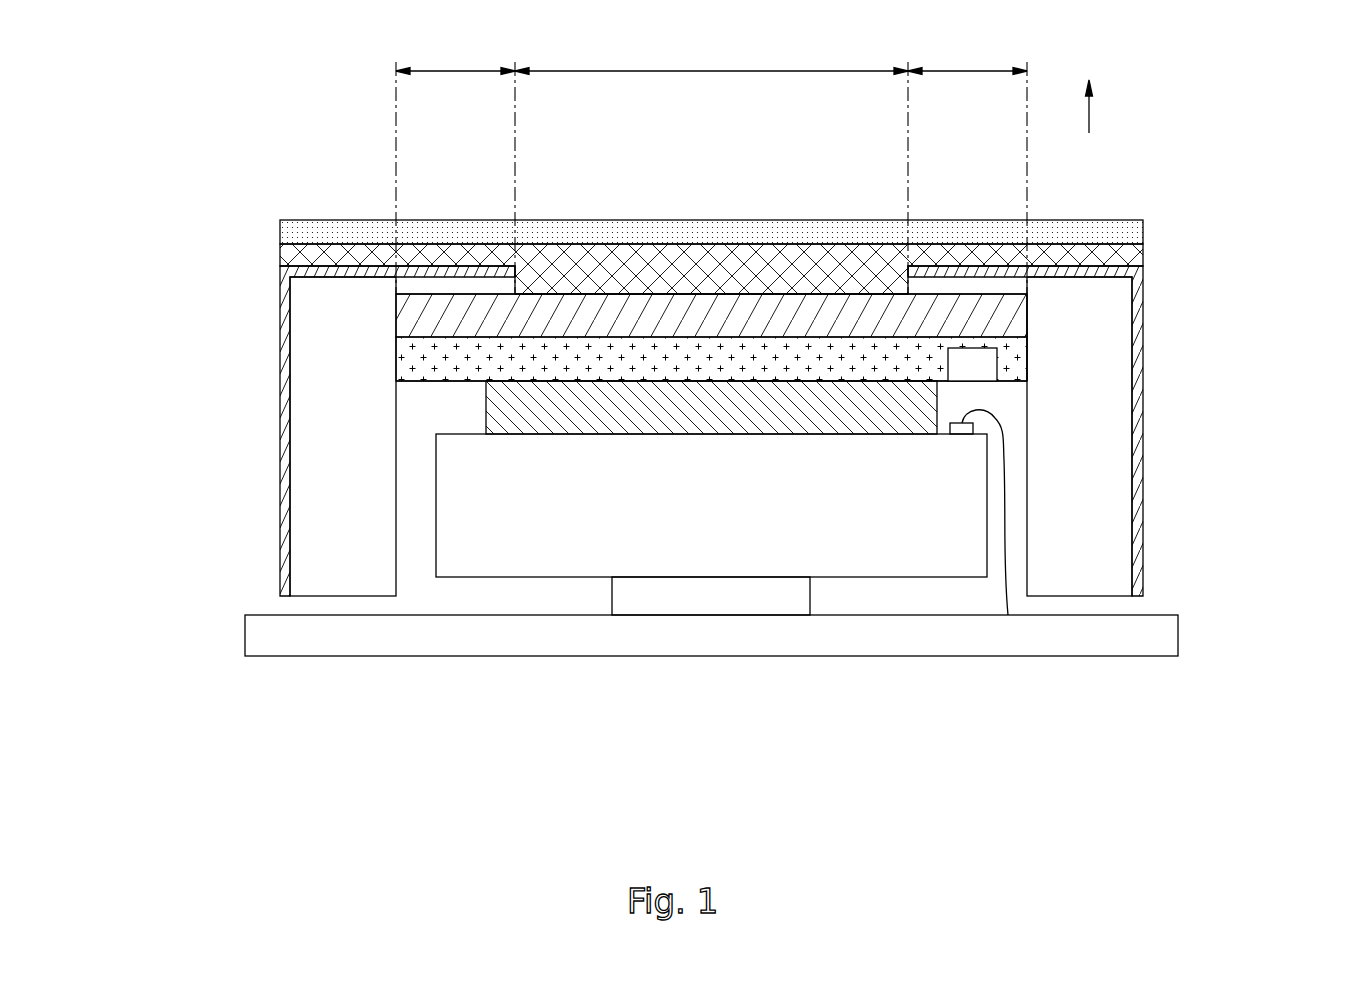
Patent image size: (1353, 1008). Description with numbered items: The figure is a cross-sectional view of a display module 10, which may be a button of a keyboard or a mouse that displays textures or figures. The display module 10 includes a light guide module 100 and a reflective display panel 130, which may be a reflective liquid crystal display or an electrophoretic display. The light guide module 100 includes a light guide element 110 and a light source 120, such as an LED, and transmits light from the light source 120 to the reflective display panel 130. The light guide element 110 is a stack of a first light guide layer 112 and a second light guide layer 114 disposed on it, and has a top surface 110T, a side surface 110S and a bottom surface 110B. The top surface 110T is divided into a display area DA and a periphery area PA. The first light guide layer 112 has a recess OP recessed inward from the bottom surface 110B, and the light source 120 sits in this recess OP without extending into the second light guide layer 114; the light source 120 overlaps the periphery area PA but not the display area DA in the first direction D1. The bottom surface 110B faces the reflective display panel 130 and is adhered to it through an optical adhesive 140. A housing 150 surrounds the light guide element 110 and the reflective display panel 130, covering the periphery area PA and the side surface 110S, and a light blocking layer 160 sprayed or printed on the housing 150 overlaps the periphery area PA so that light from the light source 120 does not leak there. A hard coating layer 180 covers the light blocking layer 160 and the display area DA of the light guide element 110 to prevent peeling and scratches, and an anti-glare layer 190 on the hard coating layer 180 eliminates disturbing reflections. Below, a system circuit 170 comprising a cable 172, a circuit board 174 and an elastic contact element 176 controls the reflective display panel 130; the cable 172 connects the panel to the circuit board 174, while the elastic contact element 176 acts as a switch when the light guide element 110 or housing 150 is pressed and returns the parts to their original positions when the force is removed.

The display module 10 is at (177, 31).
The light guide module 100 is at (167, 68).
The light guide element 110 is at (871, 312).
The top surface 110T is at (1005, 293).
The side surface 110S is at (1027, 370).
The bottom surface 110B is at (1027, 385).
The first light guide layer 112 is at (1022, 355).
The second light guide layer 114 is at (1023, 310).
The light source 120 is at (973, 368).
The reflective display panel 130 is at (495, 517).
The optical adhesive 140 is at (495, 420).
The housing 150 is at (335, 368).
The light blocking layer 160 is at (285, 315).
The system circuit 170 is at (711, 593).
The cable 172 is at (1003, 592).
The circuit board 174 is at (873, 632).
The elastic contact element 176 is at (775, 597).
The hard coating layer 180 is at (288, 252).
The anti-glare layer 190 is at (290, 233).
The recess OP is at (946, 364).
The periphery area PA is at (964, 68).
The display area DA is at (708, 68).
The first direction D1 is at (1090, 110).